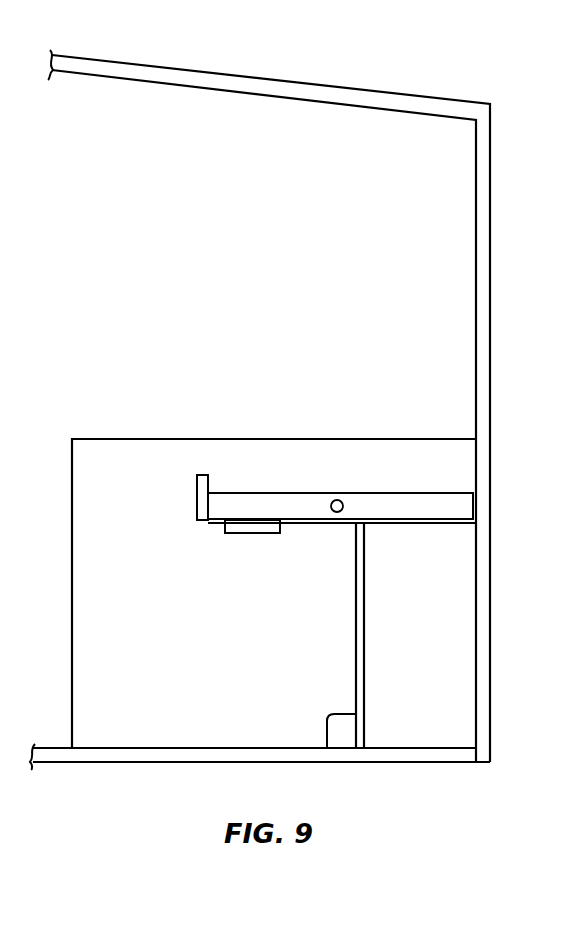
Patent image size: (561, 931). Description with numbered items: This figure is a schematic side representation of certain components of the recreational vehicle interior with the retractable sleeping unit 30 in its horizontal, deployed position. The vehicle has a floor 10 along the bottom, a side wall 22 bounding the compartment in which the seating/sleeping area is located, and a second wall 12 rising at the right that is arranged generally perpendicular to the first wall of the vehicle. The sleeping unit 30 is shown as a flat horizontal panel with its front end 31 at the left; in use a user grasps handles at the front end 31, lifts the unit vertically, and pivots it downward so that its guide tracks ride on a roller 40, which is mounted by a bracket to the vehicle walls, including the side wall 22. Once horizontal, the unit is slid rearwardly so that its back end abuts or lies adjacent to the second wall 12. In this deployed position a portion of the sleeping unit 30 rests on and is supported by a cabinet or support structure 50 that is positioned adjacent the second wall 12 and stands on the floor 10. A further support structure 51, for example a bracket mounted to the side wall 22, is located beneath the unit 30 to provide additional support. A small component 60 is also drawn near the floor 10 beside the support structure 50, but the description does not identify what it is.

The floor 10 is at (118, 748).
The second wall 12 is at (476, 250).
The side wall 22 is at (274, 593).
The retractable sleeping unit 30 is at (265, 495).
The front end 31 is at (197, 505).
The roller 40 is at (340, 500).
The cabinet or support structure 50 is at (392, 631).
The support structure 51 is at (253, 533).
The stop block 60 is at (343, 741).